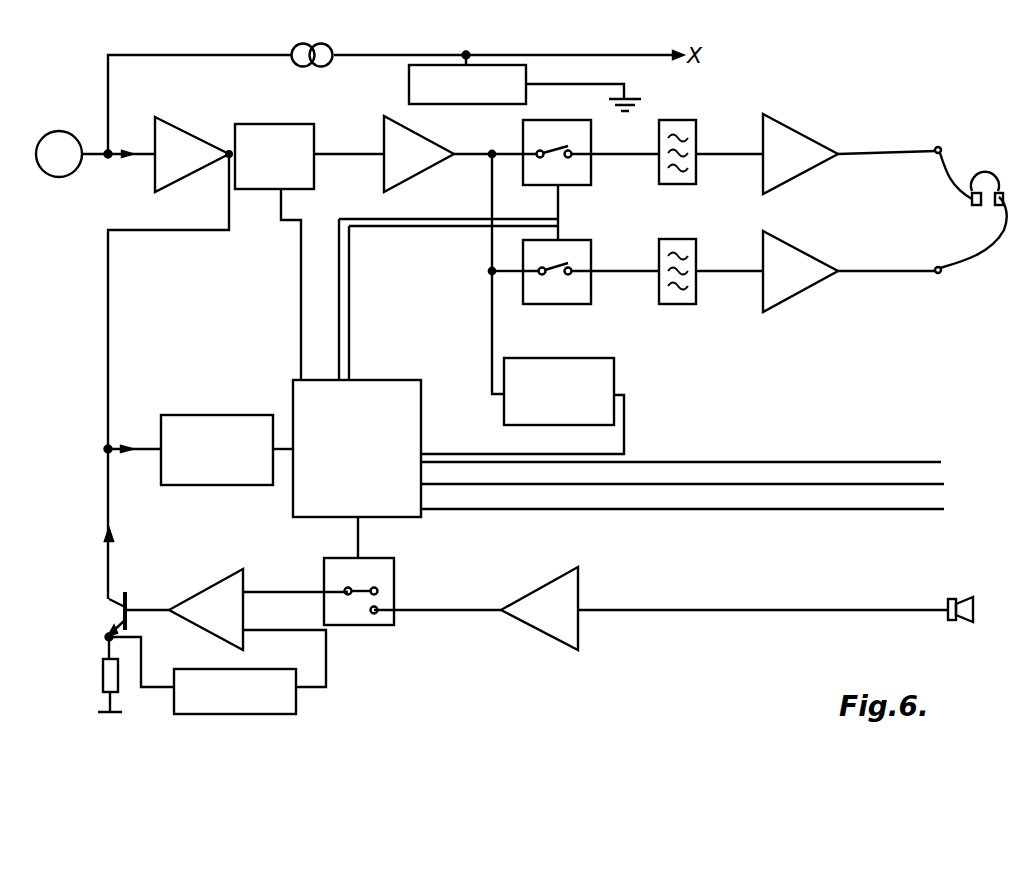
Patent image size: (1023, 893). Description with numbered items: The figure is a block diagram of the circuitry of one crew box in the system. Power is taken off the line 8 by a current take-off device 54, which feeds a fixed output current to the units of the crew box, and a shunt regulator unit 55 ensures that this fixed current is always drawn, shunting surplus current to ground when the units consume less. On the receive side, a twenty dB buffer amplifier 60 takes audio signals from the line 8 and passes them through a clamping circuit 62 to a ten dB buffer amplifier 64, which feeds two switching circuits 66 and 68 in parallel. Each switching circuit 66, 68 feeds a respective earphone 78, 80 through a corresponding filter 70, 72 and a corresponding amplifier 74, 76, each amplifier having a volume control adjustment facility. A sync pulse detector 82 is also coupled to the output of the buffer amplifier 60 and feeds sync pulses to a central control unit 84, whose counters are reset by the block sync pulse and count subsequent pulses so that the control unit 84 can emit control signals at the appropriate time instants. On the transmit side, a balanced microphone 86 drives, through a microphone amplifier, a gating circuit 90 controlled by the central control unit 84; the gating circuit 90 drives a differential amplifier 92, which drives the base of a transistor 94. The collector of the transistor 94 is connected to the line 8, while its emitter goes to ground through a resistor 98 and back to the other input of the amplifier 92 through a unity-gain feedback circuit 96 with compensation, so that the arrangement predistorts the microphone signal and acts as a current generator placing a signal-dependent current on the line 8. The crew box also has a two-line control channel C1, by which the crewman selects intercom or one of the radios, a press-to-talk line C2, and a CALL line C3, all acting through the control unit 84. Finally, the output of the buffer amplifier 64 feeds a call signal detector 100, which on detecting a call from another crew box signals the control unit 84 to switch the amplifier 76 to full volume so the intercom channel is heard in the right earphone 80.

The line 8 is at (63, 138).
The current take-off device 54 is at (292, 63).
The shunt regulator unit 55 is at (408, 85).
The buffer amplifier 60 is at (194, 128).
The clamping circuit 62 is at (275, 122).
The buffer amplifier 64 is at (418, 120).
The switching circuit 66 is at (574, 118).
The switching circuit 68 is at (578, 232).
The filter 70 is at (692, 118).
The filter 72 is at (674, 237).
The amplifier 74 is at (815, 130).
The amplifier 76 is at (800, 250).
The earphone 78 is at (971, 199).
The earphone 80 is at (1002, 190).
The sync pulse detector 82 is at (194, 413).
The central control unit 84 is at (292, 386).
The balanced microphone 86 is at (964, 595).
The gating circuit 90 is at (365, 624).
The differential amplifier 92 is at (210, 584).
The transistor 94 is at (127, 589).
The feedback circuit 96 is at (296, 692).
The resistor 98 is at (100, 668).
The call signal detector 100 is at (610, 356).
The two-line control channel C1 is at (800, 508).
The press to talk line C2 is at (746, 482).
The CALL line C3 is at (788, 460).